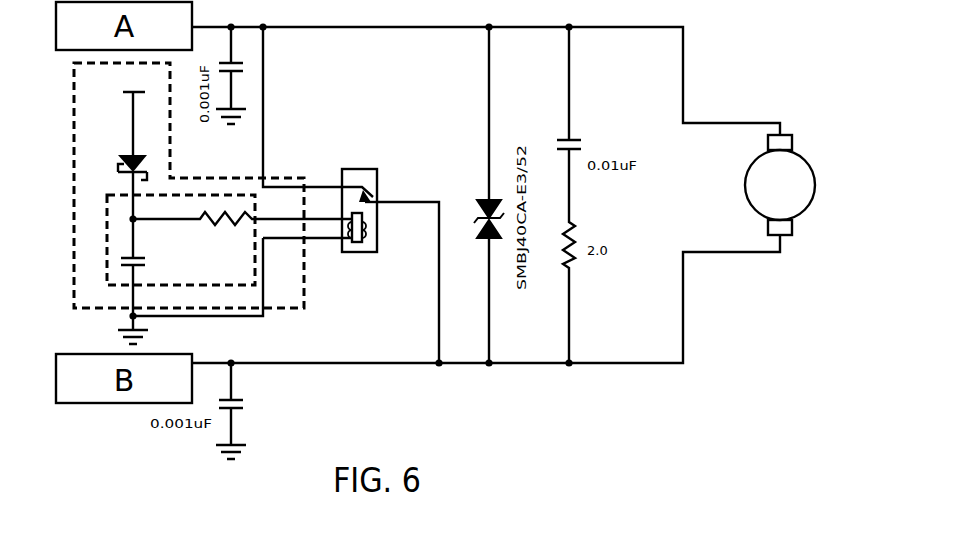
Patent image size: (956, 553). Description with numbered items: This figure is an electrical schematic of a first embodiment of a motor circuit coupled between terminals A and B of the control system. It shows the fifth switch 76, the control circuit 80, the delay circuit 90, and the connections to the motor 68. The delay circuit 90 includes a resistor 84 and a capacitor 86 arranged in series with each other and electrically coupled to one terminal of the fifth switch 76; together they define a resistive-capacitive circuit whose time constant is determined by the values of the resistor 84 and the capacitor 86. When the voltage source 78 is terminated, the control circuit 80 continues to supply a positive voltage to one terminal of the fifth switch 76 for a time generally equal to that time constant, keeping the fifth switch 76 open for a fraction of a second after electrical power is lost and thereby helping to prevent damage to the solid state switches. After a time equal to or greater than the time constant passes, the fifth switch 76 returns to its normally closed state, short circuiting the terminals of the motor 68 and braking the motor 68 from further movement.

The motor 68 is at (811, 167).
The fifth switch 76 is at (377, 169).
The voltage source 78 is at (128, 110).
The control circuit 80 is at (278, 310).
The resistor 84 is at (207, 222).
The capacitor 86 is at (128, 266).
The delay circuit 90 is at (107, 238).